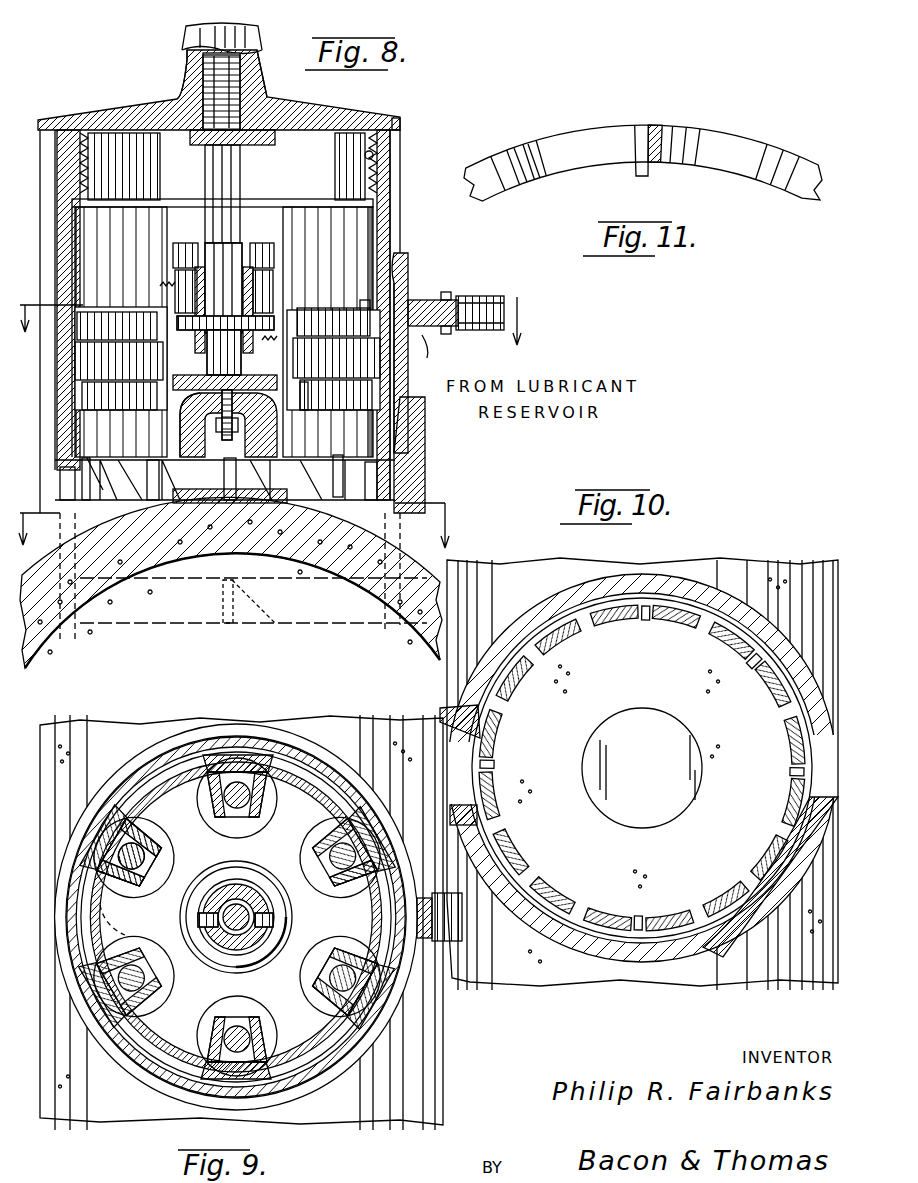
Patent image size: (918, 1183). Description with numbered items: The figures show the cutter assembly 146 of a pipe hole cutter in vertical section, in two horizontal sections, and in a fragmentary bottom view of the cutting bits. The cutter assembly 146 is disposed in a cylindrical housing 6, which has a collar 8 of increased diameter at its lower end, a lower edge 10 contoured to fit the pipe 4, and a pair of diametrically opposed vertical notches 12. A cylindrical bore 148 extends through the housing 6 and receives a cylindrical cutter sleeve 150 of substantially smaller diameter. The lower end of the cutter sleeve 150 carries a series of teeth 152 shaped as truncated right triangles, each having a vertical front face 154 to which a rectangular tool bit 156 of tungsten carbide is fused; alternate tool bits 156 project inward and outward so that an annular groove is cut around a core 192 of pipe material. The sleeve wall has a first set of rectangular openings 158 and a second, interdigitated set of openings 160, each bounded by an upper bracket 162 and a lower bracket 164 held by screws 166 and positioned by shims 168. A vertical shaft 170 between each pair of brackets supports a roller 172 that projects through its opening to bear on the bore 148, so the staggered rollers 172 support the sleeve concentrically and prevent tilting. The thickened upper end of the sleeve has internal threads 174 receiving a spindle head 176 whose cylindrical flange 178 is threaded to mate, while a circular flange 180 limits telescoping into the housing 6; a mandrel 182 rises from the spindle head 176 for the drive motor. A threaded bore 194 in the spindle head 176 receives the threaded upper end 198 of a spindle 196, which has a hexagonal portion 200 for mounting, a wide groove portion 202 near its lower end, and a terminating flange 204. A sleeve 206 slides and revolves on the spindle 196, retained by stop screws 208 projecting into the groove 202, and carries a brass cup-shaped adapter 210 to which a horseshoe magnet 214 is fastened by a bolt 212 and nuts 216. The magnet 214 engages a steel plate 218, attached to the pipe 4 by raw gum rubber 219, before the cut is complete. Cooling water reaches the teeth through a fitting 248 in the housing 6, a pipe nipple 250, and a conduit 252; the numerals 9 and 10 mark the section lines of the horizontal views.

In FIG. 10, the pipe 4 is at (786, 560).
In FIG. 9, the pipe 4 is at (360, 725).
In FIG. 8, the cylindrical housing 6 is at (412, 282).
In FIG. 10, the cylindrical housing 6 is at (590, 578).
In FIG. 9, the cylindrical housing 6 is at (278, 745).
In FIG. 8, the collar 8 is at (425, 415).
In FIG. 9, the collar 8 is at (255, 737).
In FIG. 8, the section line 9- 9 is at (271, 305).
In FIG. 8, the lower edge 10 is at (358, 540).
In FIG. 10, the vertical notches 12 is at (822, 738).
In FIG. 9, the vertical notches 12 is at (436, 745).
In FIG. 8, the cutter assembly 146 is at (104, 98).
In FIG. 9, the cutter assembly 146 is at (157, 775).
In FIG. 8, the cylindrical bore 148 is at (400, 255).
In FIG. 10, the cylindrical bore 148 is at (668, 595).
In FIG. 8, the cutter sleeve 150 is at (390, 200).
In FIG. 11, the cutter sleeve 150 is at (740, 138).
In FIG. 8, the teeth 152 is at (150, 488).
In FIG. 11, the teeth 152 is at (665, 140).
In FIG. 10, the teeth 152 is at (618, 612).
In FIG. 8, the front faces 154 is at (155, 460).
In FIG. 11, the front faces 154 is at (645, 125).
In FIG. 8, the tool bits 156 is at (100, 462).
In FIG. 11, the tool bits 156 is at (648, 150).
In FIG. 10, the tool bits 156 is at (640, 612).
In FIG. 8, the first set of rectangular openings 158 is at (303, 410).
In FIG. 9, the first set of rectangular openings 158 is at (100, 920).
In FIG. 8, the second set of rectangular openings 160 is at (272, 268).
In FIG. 9, the second set of rectangular openings 160 is at (306, 1012).
In FIG. 8, the upper bracket 162 is at (170, 262).
In FIG. 9, the upper bracket 162 is at (145, 845).
In FIG. 8, the lower bracket 164 is at (278, 276).
In FIG. 9, the lower bracket 164 is at (275, 792).
In FIG. 9, the screws 166 is at (208, 760).
In FIG. 9, the shims 168 is at (310, 815).
In FIG. 8, the vertical shaft 170 is at (110, 310).
In FIG. 9, the vertical shaft 170 is at (236, 808).
In FIG. 8, the roller 172 is at (255, 378).
In FIG. 9, the roller 172 is at (210, 835).
In FIG. 8, the internal threads 174 is at (374, 156).
In FIG. 8, the spindle head 176 is at (328, 118).
In FIG. 8, the cylindrical flange 178 is at (98, 207).
In FIG. 8, the circular flange 180 is at (398, 118).
In FIG. 8, the mandrel 182 is at (245, 42).
In FIG. 8, the core 192 is at (155, 580).
In FIG. 8, the threaded bore 194 is at (200, 100).
In FIG. 8, the spindle 196 is at (242, 175).
In FIG. 8, the threaded upper end 198 is at (240, 84).
In FIG. 8, the hexagonal portion 200 is at (262, 136).
In FIG. 8, the groove portion 202 is at (210, 268).
In FIG. 9, the groove portion 202 is at (235, 968).
In FIG. 8, the flange 204 is at (234, 320).
In FIG. 9, the flange 204 is at (244, 910).
In FIG. 8, the sleeve 206 is at (246, 240).
In FIG. 8, the stop screws 208 is at (172, 305).
In FIG. 9, the stop screws 208 is at (275, 920).
In FIG. 8, the cup-shaped adapter 210 is at (277, 398).
In FIG. 9, the cup-shaped adapter 210 is at (240, 880).
In FIG. 8, the bolt 212 is at (224, 352).
In FIG. 8, the horseshoe magnet 214 is at (180, 417).
In FIG. 8, the nuts 216 is at (240, 425).
In FIG. 8, the plate 218 is at (232, 503).
In FIG. 10, the plate 218 is at (622, 725).
In FIG. 8, the raw gum rubber 219 is at (231, 582).
In FIG. 8, the fitting 248 is at (427, 355).
In FIG. 8, the pipe nipple 250 is at (474, 296).
In FIG. 8, the conduit 252 is at (498, 296).